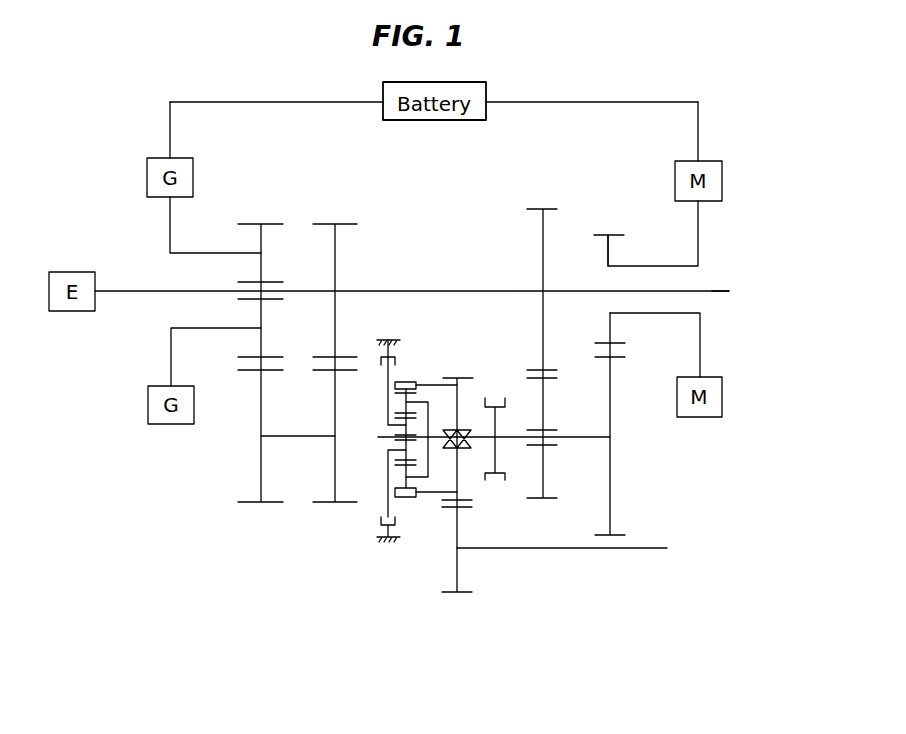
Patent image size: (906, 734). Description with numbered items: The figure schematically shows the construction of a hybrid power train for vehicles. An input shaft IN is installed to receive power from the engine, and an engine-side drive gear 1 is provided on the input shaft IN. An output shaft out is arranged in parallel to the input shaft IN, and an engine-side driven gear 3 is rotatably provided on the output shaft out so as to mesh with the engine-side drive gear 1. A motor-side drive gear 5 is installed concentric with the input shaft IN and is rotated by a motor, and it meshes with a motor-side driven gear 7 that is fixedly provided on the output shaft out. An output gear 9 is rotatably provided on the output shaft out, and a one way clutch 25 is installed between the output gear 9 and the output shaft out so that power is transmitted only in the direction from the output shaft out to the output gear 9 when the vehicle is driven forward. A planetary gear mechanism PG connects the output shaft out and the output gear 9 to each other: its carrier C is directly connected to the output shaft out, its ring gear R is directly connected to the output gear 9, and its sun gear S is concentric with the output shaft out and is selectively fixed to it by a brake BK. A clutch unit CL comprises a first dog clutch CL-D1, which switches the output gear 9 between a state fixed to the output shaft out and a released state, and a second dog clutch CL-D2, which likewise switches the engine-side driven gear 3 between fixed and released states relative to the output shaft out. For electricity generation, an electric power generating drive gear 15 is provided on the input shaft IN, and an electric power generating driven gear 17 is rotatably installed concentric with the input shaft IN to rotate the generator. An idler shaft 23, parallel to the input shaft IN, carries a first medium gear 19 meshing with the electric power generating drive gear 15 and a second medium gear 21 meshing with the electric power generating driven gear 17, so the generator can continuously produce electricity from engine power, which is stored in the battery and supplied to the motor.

The engine-side drive gear 1 is at (549, 209).
The engine-side driven gear 3 is at (553, 500).
The motor-side drive gear 5 is at (616, 235).
The motor-side driven gear 7 is at (618, 537).
The output gear 9 is at (465, 378).
The electric power generating drive gear 15 is at (323, 224).
The electric power generating driven gear 17 is at (250, 224).
The first medium gear 19 is at (323, 502).
The second medium gear 21 is at (250, 502).
The idler shaft 23 is at (262, 437).
The one way clutch 25 is at (449, 448).
The ring gear R is at (407, 379).
The sun gear S is at (393, 419).
The carrier C is at (432, 415).
The planetary gear mechanism PG is at (376, 461).
The brake BK is at (405, 538).
The first dog clutch CL-D1 is at (483, 465).
The second dog clutch CL-D2 is at (505, 465).
The clutch unit CL is at (552, 672).
The input shaft IN is at (712, 289).
The output shaft out is at (587, 437).